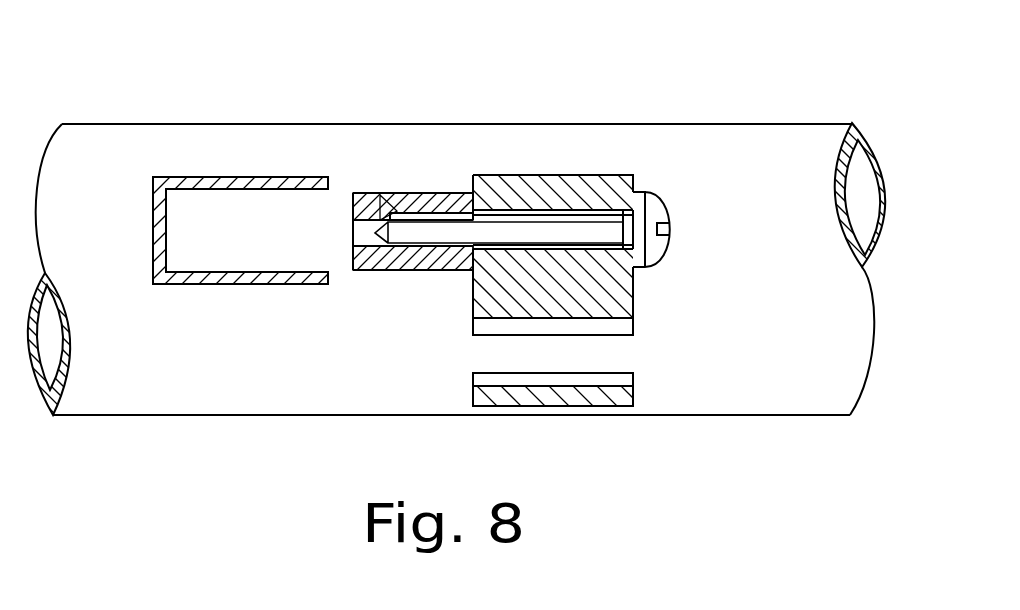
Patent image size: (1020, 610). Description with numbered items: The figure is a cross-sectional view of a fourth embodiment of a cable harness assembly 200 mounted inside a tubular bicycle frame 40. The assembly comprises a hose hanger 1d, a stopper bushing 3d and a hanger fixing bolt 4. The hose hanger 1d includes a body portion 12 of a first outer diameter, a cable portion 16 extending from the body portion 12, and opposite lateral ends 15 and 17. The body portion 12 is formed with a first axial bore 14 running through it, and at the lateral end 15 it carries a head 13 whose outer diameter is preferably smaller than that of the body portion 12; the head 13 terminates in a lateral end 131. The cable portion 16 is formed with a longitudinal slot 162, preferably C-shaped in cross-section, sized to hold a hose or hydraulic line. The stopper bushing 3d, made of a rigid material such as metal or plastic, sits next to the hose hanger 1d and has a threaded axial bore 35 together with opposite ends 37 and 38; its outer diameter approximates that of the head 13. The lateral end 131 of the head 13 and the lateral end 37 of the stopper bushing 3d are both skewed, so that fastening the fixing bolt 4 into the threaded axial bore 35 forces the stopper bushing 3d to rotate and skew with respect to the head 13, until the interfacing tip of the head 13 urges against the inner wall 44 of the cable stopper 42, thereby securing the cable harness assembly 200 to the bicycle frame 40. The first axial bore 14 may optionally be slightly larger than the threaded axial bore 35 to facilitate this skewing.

The bicycle frame 40 is at (105, 135).
The cable stopper 42 is at (187, 177).
The inner wall 44 is at (247, 192).
The threaded axial bore 35 is at (365, 237).
The lateral end 131 is at (380, 207).
The head 13 is at (425, 195).
The lateral end 15 is at (472, 177).
The first axial bore 14 is at (515, 218).
The hose hanger 1d is at (560, 192).
The body portion 12 is at (595, 178).
The cable harness assembly 200 is at (633, 144).
The lateral end 17 is at (637, 178).
The hanger fixing bolt 4 is at (663, 206).
The slot 162 is at (623, 353).
The cable portion 16 is at (635, 403).
The lateral end 37 is at (447, 261).
The stopper bushing 3d is at (382, 270).
The end 38 is at (353, 262).